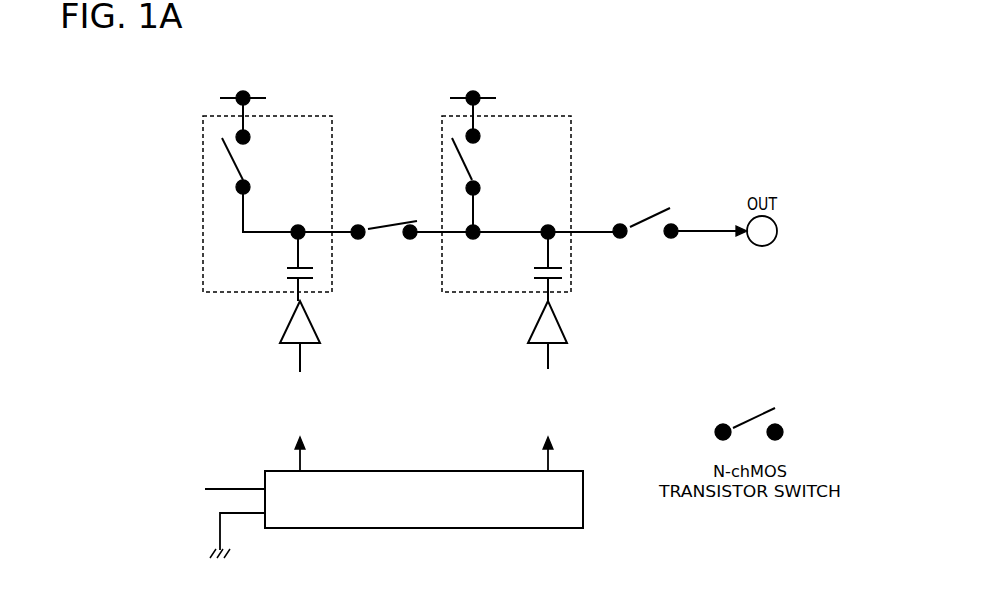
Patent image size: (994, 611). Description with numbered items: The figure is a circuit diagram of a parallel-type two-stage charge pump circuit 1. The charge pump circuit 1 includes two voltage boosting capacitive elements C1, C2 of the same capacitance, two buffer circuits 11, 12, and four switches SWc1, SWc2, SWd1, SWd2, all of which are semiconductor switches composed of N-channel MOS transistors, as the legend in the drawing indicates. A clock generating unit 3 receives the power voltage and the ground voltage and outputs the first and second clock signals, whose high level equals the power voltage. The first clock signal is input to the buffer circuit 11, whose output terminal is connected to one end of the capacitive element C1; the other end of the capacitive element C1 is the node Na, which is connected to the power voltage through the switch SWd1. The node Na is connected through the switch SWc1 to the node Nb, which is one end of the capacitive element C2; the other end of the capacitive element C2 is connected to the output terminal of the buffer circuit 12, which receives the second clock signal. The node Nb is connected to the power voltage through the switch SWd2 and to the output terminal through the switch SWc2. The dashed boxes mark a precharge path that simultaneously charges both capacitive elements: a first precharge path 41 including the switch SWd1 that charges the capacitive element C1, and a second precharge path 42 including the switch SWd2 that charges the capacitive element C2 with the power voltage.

The charge pump circuit 1 is at (415, 44).
The clock generating unit 3 is at (492, 471).
The buffer circuit 11 is at (295, 326).
The buffer circuit 12 is at (543, 326).
The first precharge path 41 is at (315, 115).
The second precharge path 42 is at (553, 115).
The switch SWd1 is at (226, 163).
The switch SWd2 is at (455, 155).
The switch SWc1 is at (383, 224).
The switch SWc2 is at (648, 213).
The capacitive element C1 is at (285, 270).
The capacitive element C2 is at (533, 270).
The node Na is at (300, 225).
The node Nb is at (549, 225).